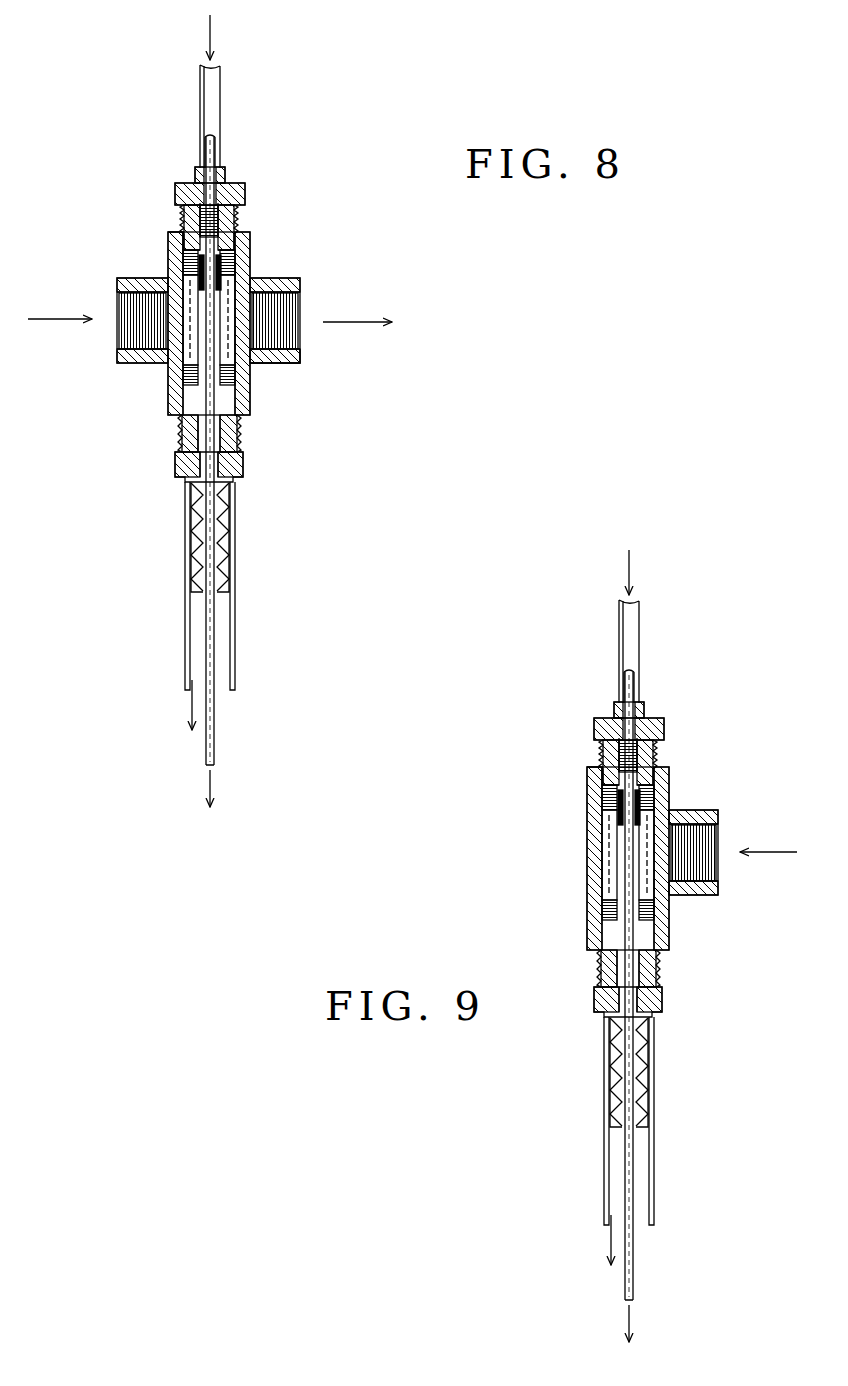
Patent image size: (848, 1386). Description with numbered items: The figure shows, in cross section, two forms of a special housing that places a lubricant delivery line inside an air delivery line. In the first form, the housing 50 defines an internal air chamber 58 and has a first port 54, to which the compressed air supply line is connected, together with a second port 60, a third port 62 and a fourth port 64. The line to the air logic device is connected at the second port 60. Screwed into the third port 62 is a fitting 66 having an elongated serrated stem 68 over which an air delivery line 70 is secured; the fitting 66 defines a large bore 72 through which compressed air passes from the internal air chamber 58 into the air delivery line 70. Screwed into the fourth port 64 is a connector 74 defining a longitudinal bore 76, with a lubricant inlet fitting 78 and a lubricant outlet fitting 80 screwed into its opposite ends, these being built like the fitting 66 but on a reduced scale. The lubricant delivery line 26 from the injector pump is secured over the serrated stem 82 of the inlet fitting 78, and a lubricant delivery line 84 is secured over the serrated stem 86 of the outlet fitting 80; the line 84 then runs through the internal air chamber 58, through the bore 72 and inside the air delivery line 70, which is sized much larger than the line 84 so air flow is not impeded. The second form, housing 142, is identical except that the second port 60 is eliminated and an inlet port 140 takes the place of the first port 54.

In FIG. 8, the lubricant delivery line 26 is at (221, 108).
In FIG. 9, the lubricant delivery line 26 is at (653, 651).
In FIG. 8, the housing 50 is at (294, 258).
In FIG. 8, the first port 54 is at (135, 285).
In FIG. 8, the internal air chamber 58 is at (228, 355).
In FIG. 9, the internal air chamber 58 is at (594, 855).
In FIG. 8, the second port 60 is at (300, 355).
In FIG. 8, the third port 62 is at (243, 405).
In FIG. 9, the third port 62 is at (656, 952).
In FIG. 8, the fourth port 64 is at (252, 241).
In FIG. 9, the fourth port 64 is at (651, 849).
In FIG. 8, the fitting 66 is at (243, 463).
In FIG. 9, the fitting 66 is at (655, 992).
In FIG. 8, the serrated stem 68 is at (230, 568).
In FIG. 9, the serrated stem 68 is at (657, 1072).
In FIG. 8, the air delivery line 70 is at (236, 640).
In FIG. 9, the air delivery line 70 is at (658, 1121).
In FIG. 8, the bore 72 is at (224, 520).
In FIG. 9, the bore 72 is at (657, 1072).
In FIG. 8, the connector 74 is at (246, 194).
In FIG. 9, the connector 74 is at (654, 742).
In FIG. 8, the longitudinal bore 76 is at (177, 201).
In FIG. 9, the longitudinal bore 76 is at (594, 735).
In FIG. 8, the lubricant inlet fitting 78 is at (223, 176).
In FIG. 9, the lubricant inlet fitting 78 is at (652, 700).
In FIG. 8, the lubricant outlet fitting 80 is at (171, 240).
In FIG. 9, the lubricant outlet fitting 80 is at (570, 767).
In FIG. 8, the serrated stem 82 is at (204, 150).
In FIG. 9, the serrated stem 82 is at (602, 678).
In FIG. 8, the lubricant delivery line 84 is at (218, 738).
In FIG. 9, the lubricant delivery line 84 is at (658, 986).
In FIG. 8, the serrated stem 86 is at (222, 282).
In FIG. 9, the serrated stem 86 is at (586, 817).
In FIG. 9, the inlet port 140 is at (715, 868).
In FIG. 9, the housing 142 is at (737, 769).